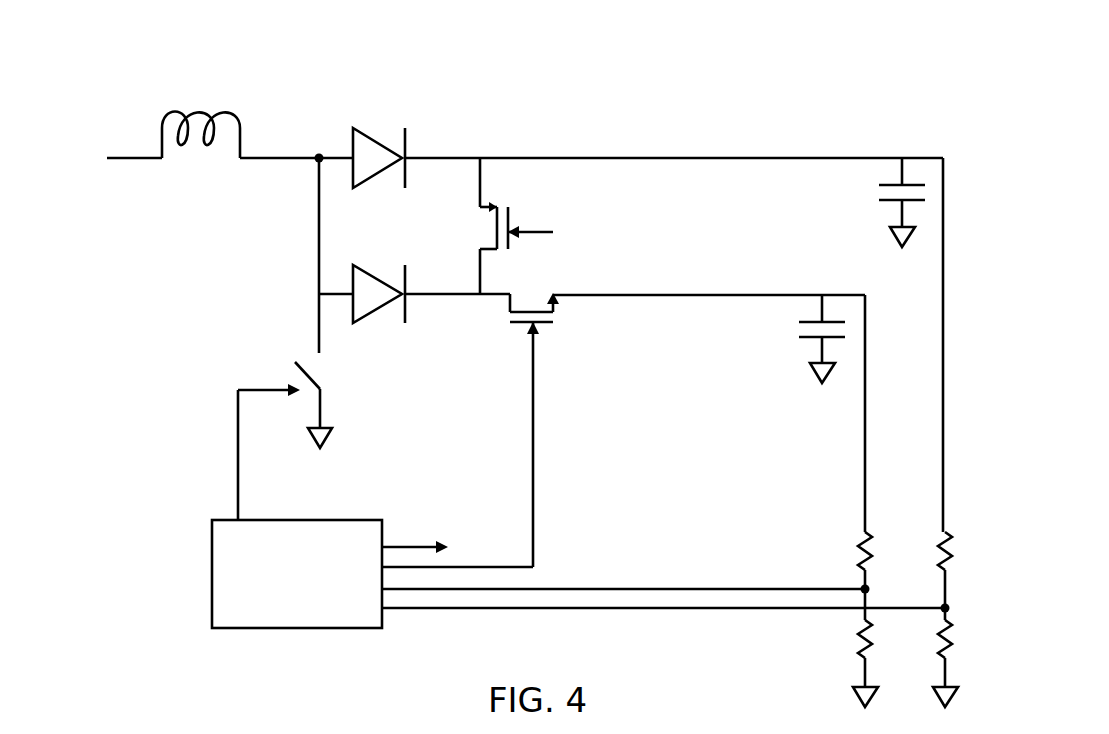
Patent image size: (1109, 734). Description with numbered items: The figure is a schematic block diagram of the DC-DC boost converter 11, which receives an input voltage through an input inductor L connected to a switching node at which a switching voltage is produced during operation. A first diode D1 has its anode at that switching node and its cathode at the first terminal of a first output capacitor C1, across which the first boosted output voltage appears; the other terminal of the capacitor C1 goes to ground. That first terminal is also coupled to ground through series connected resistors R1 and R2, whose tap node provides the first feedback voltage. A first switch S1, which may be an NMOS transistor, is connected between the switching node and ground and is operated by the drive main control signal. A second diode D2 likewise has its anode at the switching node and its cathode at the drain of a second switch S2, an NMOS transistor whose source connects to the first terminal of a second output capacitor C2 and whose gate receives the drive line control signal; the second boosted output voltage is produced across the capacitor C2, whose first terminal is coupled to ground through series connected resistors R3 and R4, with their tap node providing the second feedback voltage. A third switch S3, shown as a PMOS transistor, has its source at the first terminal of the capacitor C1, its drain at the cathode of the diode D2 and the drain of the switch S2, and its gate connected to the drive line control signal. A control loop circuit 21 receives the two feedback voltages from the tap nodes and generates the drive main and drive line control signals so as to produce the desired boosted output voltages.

The DC-DC boost converter 11 is at (502, 93).
The control loop circuit 21 is at (210, 583).
The input inductor L is at (201, 121).
The first diode D1 is at (379, 158).
The second diode D2 is at (379, 294).
The first switch S1 is at (315, 403).
The second switch S2 is at (534, 310).
The third switch S3 is at (507, 225).
The first output capacitor C1 is at (888, 202).
The second output capacitor C2 is at (828, 339).
The resistor R1 is at (964, 551).
The resistor R2 is at (964, 646).
The resistor R3 is at (884, 551).
The resistor R4 is at (884, 646).